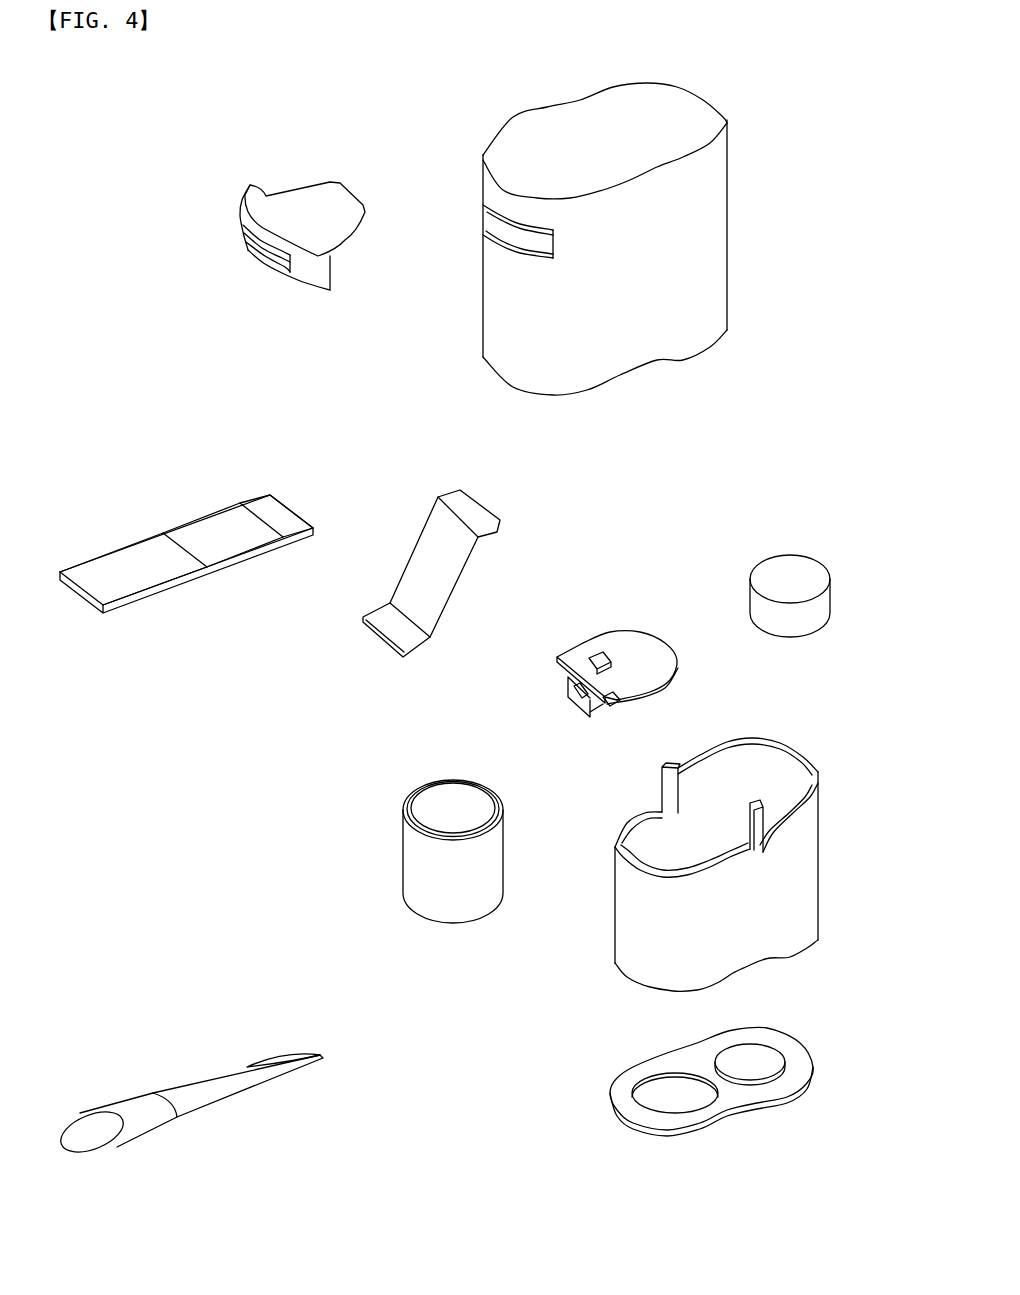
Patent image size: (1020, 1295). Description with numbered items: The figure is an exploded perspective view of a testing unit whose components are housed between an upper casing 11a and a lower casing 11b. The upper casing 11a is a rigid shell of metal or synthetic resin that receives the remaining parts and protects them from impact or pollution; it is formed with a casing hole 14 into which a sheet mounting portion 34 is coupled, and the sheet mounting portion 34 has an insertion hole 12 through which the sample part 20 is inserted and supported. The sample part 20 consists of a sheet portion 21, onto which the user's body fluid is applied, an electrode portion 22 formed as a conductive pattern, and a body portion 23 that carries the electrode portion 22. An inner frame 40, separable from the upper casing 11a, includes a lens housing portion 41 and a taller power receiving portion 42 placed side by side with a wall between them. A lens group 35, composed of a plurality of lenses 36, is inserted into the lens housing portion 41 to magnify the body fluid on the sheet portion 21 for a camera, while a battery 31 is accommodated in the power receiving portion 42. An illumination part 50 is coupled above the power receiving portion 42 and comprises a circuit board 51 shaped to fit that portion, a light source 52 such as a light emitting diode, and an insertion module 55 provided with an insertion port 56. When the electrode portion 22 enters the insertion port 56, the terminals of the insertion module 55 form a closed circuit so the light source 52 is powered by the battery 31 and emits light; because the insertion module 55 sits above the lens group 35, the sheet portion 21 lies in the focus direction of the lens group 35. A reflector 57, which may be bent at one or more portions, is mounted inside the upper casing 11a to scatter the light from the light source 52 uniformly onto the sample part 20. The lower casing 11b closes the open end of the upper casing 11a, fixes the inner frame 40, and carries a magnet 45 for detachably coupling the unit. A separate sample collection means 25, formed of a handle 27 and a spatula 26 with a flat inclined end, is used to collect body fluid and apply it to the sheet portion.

The upper casing 11a is at (611, 225).
The lower casing 11b is at (740, 1070).
The insertion hole 12 is at (262, 265).
The casing hole 14 is at (513, 232).
The sample part 20 is at (198, 555).
The sheet portion 21 is at (237, 533).
The electrode portion 22 is at (277, 513).
The body portion 23 is at (143, 573).
The sample collection means 25 is at (209, 1114).
The spatula 26 is at (283, 1058).
The handle 27 is at (127, 1113).
The battery 31 is at (810, 568).
The sheet mounting portion 34 is at (282, 223).
The lens group 35 is at (401, 822).
The lens 36 is at (450, 808).
The inner frame 40 is at (709, 858).
The lens housing portion 41 is at (673, 847).
The power receiving portion 42 is at (760, 783).
The magnet 45 is at (753, 1060).
The illumination part 50 is at (635, 635).
The circuit board 51 is at (650, 660).
The light source 52 is at (592, 660).
The insertion module 55 is at (600, 713).
The insertion port 56 is at (570, 700).
The reflector 57 is at (447, 560).